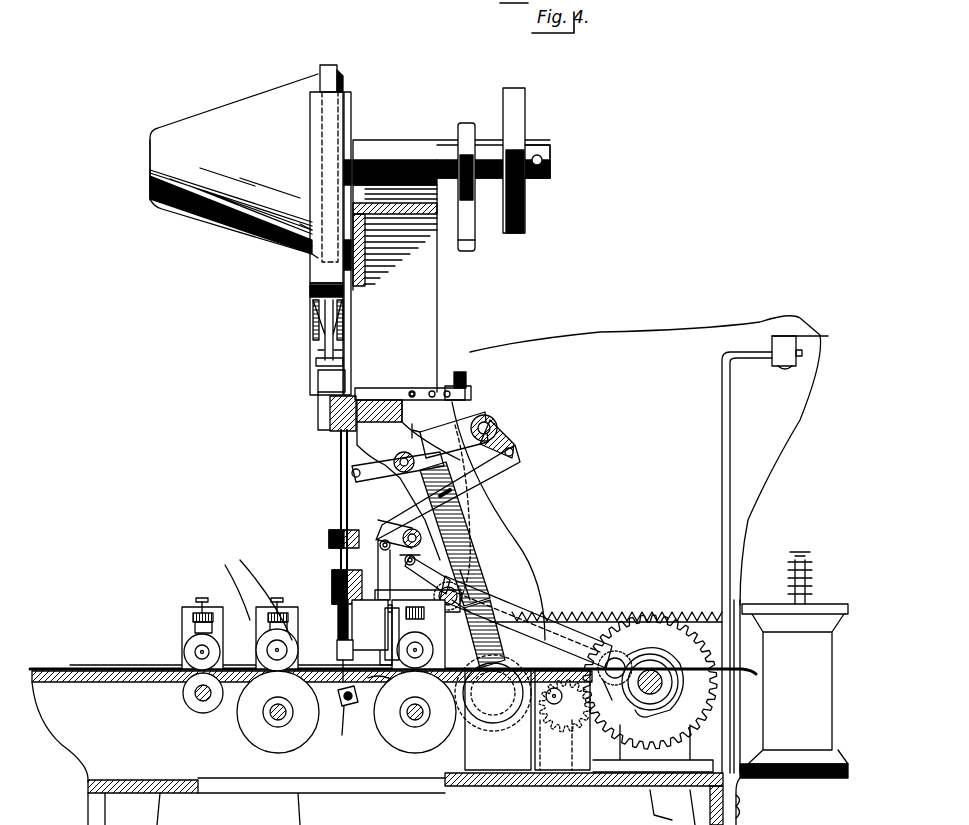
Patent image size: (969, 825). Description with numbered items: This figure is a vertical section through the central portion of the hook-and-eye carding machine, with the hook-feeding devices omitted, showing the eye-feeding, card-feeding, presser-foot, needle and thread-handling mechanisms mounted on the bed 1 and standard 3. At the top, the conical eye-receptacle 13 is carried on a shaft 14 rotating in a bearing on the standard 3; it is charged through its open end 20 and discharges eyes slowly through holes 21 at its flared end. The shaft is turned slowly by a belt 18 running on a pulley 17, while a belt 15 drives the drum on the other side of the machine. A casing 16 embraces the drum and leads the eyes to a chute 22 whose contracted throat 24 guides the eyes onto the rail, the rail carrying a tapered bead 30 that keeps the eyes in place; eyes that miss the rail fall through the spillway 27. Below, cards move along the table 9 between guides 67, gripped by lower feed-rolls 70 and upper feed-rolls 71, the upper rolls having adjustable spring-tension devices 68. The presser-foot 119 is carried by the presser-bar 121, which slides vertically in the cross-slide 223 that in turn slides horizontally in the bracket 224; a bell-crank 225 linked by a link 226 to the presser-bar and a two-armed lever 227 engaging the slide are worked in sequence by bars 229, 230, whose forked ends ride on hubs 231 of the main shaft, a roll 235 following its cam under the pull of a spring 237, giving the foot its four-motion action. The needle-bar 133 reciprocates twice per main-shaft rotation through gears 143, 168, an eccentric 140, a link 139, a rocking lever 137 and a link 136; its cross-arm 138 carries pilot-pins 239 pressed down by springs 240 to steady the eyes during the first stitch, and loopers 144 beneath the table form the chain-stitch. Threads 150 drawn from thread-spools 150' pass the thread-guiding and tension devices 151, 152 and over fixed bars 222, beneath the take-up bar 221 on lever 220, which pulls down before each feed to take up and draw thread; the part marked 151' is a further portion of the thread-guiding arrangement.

The bed 1 is at (452, 776).
The standard 3 is at (514, 548).
The table 9 is at (166, 686).
The eye-receptacle 13 is at (234, 166).
The shaft 14 is at (350, 142).
The belt 15 is at (525, 210).
The casing 16 is at (292, 246).
The pulley 17 is at (464, 124).
The belt 18 is at (474, 236).
The open end 20 is at (150, 160).
The holes 21 is at (340, 96).
The chute 22 is at (310, 290).
The contracted throat 24 is at (316, 342).
The spillway 27 is at (320, 384).
The bead 30 is at (322, 320).
The guides 67 is at (142, 664).
The spring-tension devices 68 is at (270, 616).
The lower feed-rolls 70 is at (306, 726).
The upper feed-rolls 71 is at (290, 660).
The presser-foot 119 is at (380, 690).
The presser-bar 121 is at (375, 630).
The needle-bar 133 is at (330, 528).
The link 136 is at (344, 494).
The rocking lever 137 is at (386, 460).
The cross-arm 138 is at (337, 655).
The link 139 is at (468, 535).
The eccentric 140 is at (510, 722).
The gear 143 is at (548, 730).
The loopers 144 is at (348, 720).
The threads 150 is at (645, 460).
The thread-spools 150' is at (792, 688).
The thread-guiding device 151 is at (410, 374).
The terminal bracket 151' is at (775, 554).
The tension device 152 is at (462, 384).
The gear 168 is at (680, 600).
The lever 220 is at (498, 422).
The take-up bar 221 is at (478, 414).
The fixed bars 222 is at (416, 390).
The cross-slide 223 is at (458, 592).
The bracket 224 is at (466, 556).
The bell-crank 225 is at (400, 536).
The link 226 is at (372, 576).
The two-armed lever 227 is at (456, 592).
The bar 229 is at (515, 600).
The bar 230 is at (560, 630).
The hubs 231 is at (665, 696).
The roll 235 is at (618, 690).
The spring 237 is at (680, 634).
The pilot-pins 239 is at (248, 592).
The springs 240 is at (270, 595).